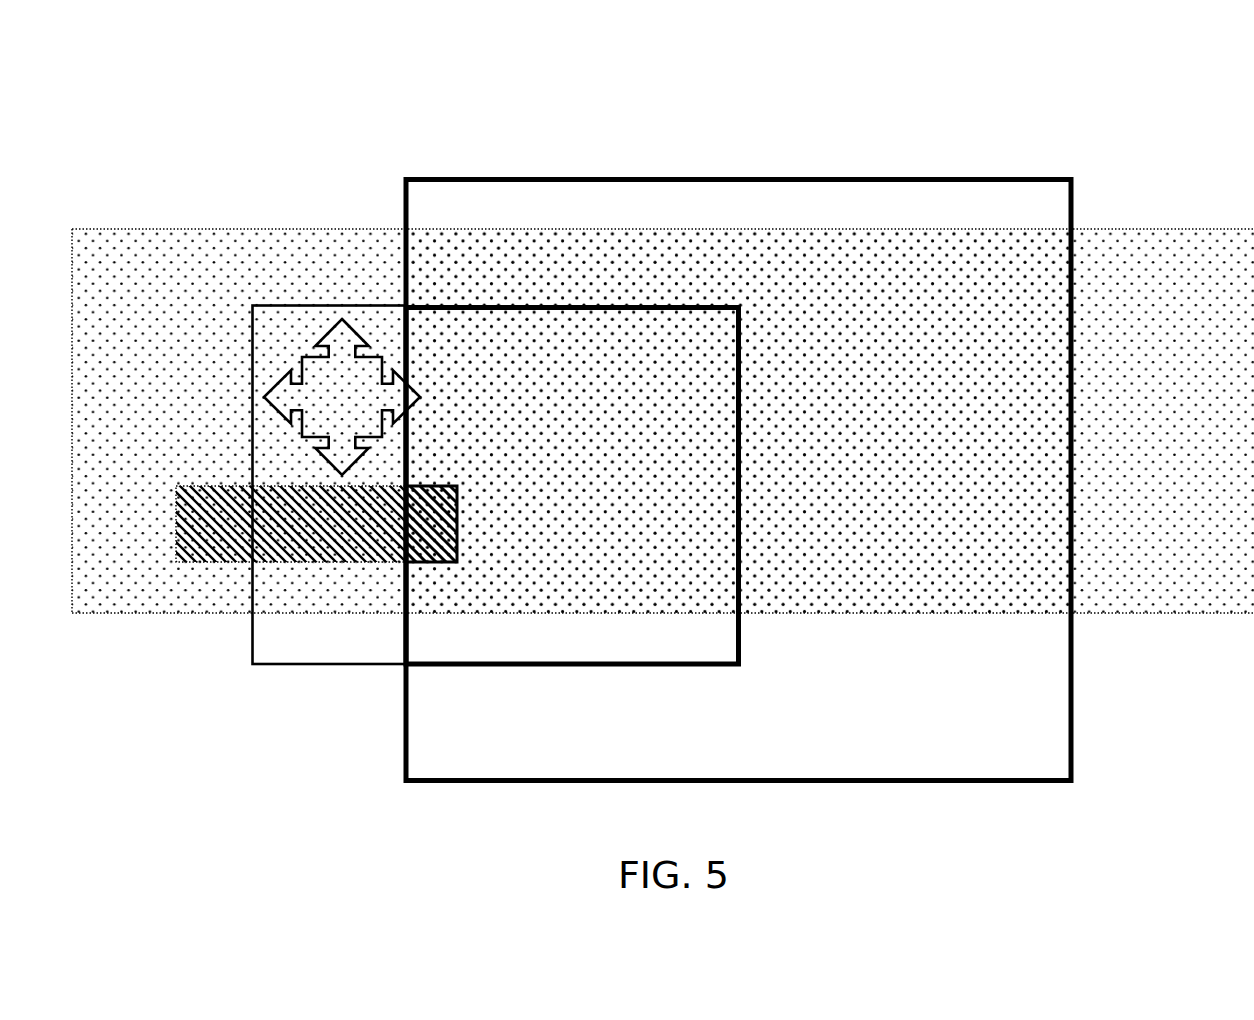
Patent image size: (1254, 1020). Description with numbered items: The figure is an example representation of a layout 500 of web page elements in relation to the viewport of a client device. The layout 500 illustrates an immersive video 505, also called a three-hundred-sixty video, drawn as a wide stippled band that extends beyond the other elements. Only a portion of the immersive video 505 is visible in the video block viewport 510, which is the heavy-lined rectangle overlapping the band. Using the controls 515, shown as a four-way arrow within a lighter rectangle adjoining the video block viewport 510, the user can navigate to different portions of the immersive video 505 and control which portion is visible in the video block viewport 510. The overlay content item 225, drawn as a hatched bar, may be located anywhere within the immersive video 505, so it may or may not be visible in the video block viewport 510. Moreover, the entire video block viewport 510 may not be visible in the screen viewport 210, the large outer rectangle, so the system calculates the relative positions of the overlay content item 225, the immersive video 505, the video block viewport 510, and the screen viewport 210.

The layout 500 is at (133, 118).
The immersive video 505 is at (130, 266).
The screen viewport 210 is at (1062, 166).
The video block viewport 510 is at (716, 354).
The controls 515 is at (359, 420).
The overlay content item 225 is at (232, 548).